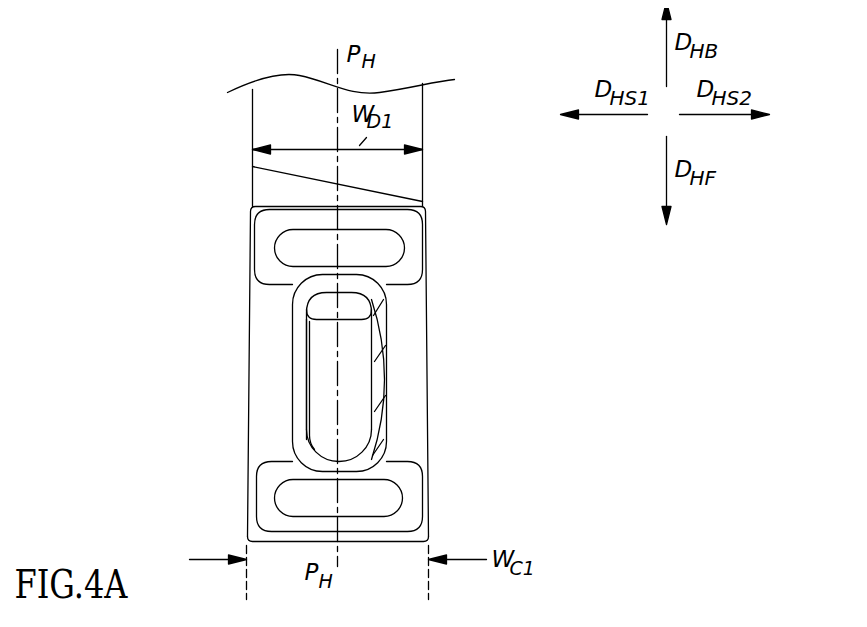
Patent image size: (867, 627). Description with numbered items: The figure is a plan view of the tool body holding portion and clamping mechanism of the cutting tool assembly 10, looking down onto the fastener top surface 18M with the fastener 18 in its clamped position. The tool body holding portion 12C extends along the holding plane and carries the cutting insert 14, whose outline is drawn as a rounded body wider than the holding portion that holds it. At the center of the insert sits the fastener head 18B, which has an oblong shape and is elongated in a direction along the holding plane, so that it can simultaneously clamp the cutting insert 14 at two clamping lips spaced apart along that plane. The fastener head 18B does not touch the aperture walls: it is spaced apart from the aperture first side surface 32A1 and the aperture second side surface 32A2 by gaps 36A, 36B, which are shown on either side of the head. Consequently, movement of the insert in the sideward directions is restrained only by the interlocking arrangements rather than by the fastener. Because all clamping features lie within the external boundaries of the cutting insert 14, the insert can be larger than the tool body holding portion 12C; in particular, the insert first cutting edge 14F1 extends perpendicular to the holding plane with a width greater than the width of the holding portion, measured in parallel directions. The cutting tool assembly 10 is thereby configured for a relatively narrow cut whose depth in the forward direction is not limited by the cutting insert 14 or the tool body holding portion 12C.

The cutting tool assembly 10 is at (161, 103).
The tool body holding portion 12C is at (410, 183).
The cutting insert 14 is at (412, 298).
The insert first cutting edge 14F1 is at (393, 542).
The fastener 18 is at (357, 352).
The fastener top surface 18M is at (356, 377).
The fastener head 18B is at (357, 443).
The aperture first side surface 32A1 is at (400, 380).
The aperture second side surface 32A2 is at (291, 355).
The gap 36A is at (378, 415).
The gap 36B is at (310, 389).